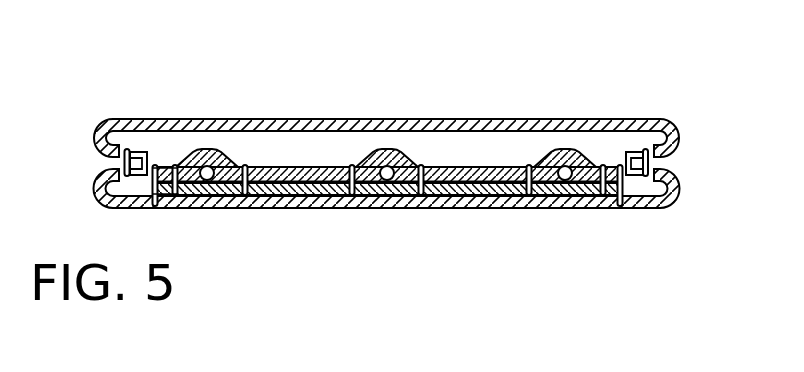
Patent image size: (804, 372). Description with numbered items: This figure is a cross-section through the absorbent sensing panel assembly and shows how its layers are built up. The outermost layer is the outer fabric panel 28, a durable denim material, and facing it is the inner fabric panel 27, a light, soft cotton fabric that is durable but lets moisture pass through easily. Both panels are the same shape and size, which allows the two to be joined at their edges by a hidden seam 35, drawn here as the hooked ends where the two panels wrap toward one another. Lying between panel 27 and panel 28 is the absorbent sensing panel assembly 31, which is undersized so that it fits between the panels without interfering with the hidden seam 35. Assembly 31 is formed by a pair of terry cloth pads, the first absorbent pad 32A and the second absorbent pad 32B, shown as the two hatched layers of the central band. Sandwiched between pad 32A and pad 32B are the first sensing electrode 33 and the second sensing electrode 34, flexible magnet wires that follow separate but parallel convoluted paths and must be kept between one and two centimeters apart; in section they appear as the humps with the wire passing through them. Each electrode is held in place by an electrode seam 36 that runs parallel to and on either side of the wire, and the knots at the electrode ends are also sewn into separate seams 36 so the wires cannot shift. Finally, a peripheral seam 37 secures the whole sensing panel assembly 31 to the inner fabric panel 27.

The inner fabric panel 27 is at (363, 208).
The outer fabric panel 28 is at (370, 119).
The absorbent sensing panel assembly 31 is at (289, 158).
The first absorbent pad 32A is at (487, 188).
The second absorbent pad 32B is at (485, 173).
The first sensing electrode 33 is at (210, 180).
The second sensing electrode 34 is at (389, 180).
The hidden seam 35 is at (127, 149).
The electrode seam 36 is at (529, 166).
The peripheral seam 37 is at (155, 166).